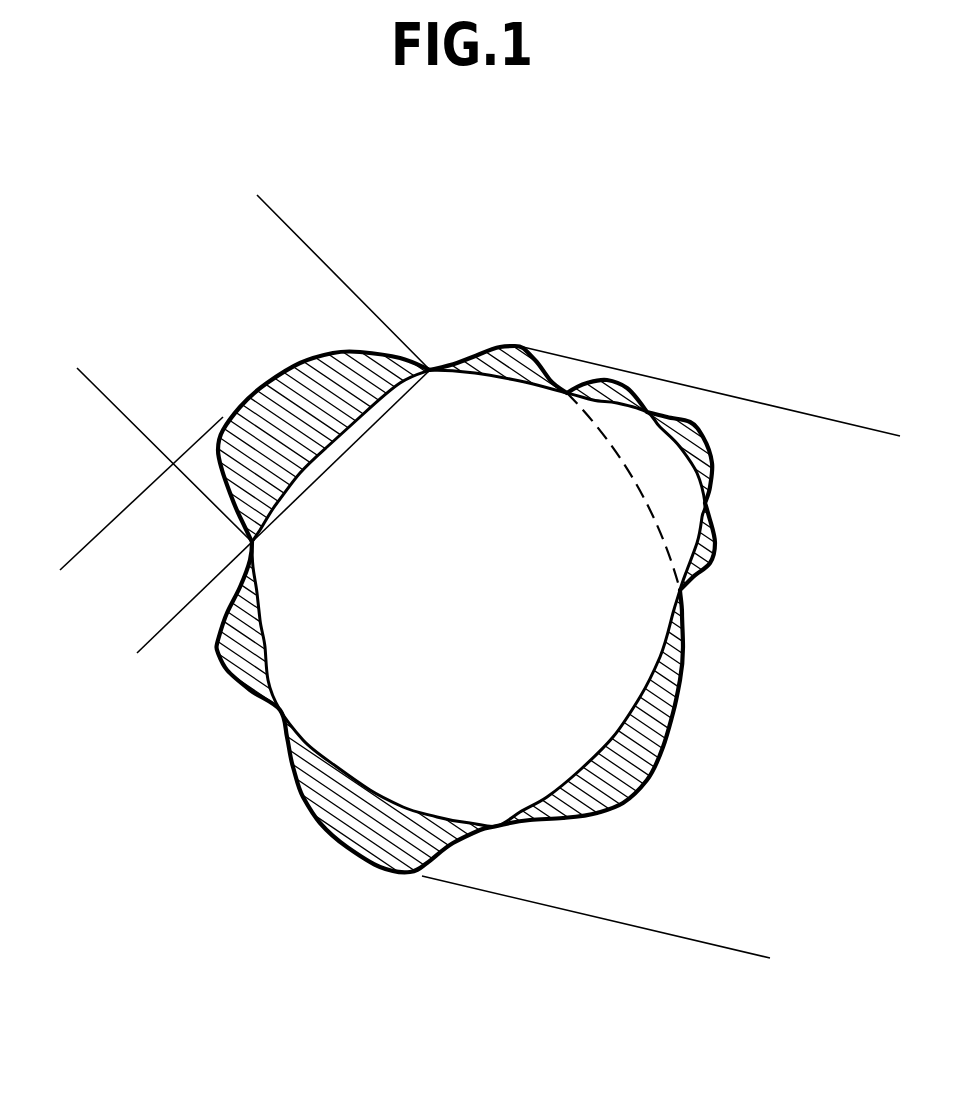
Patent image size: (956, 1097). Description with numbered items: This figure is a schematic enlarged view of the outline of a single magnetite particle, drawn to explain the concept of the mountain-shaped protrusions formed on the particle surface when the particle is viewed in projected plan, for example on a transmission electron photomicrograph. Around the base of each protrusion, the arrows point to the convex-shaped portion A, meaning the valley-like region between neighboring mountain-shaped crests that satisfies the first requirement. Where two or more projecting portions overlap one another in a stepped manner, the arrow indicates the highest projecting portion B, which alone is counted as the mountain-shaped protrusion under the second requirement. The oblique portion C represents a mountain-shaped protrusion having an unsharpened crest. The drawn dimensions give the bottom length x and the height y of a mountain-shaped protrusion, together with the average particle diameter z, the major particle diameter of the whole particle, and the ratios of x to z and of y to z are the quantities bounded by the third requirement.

The convex-shaped portion A is at (431, 362).
The highest projecting portion B is at (713, 448).
The oblique portion C is at (310, 375).
The bottom length x is at (286, 226).
The height y is at (98, 538).
The average particle diameter z is at (843, 420).